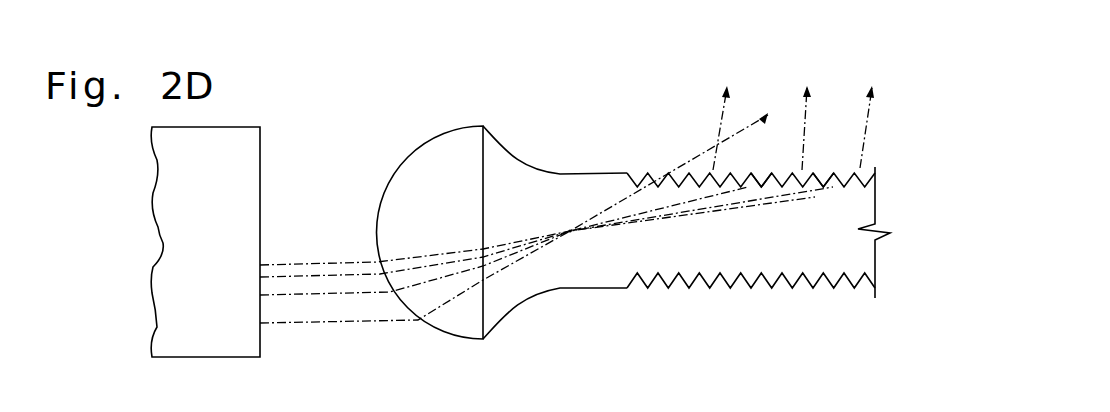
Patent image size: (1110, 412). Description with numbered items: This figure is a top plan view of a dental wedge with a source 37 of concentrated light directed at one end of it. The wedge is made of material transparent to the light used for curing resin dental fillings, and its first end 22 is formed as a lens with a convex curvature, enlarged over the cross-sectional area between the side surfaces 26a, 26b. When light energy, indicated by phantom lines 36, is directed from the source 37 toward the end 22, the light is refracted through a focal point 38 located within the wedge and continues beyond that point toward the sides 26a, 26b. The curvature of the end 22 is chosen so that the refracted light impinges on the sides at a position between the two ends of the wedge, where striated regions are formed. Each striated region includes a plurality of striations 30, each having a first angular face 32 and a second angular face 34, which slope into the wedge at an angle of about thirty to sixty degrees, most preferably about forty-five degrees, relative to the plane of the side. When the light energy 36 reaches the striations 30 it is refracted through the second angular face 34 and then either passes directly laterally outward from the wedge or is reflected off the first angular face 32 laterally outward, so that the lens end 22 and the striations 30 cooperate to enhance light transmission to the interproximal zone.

The first end 22 is at (413, 175).
The side surface 26a is at (832, 278).
The side surface 26b is at (545, 178).
The striations 30 is at (641, 185).
The first angular face 32 is at (815, 178).
The second angular face 34 is at (763, 174).
The light energy 36 is at (305, 262).
The source 37 is at (262, 156).
The focal point 38 is at (570, 240).